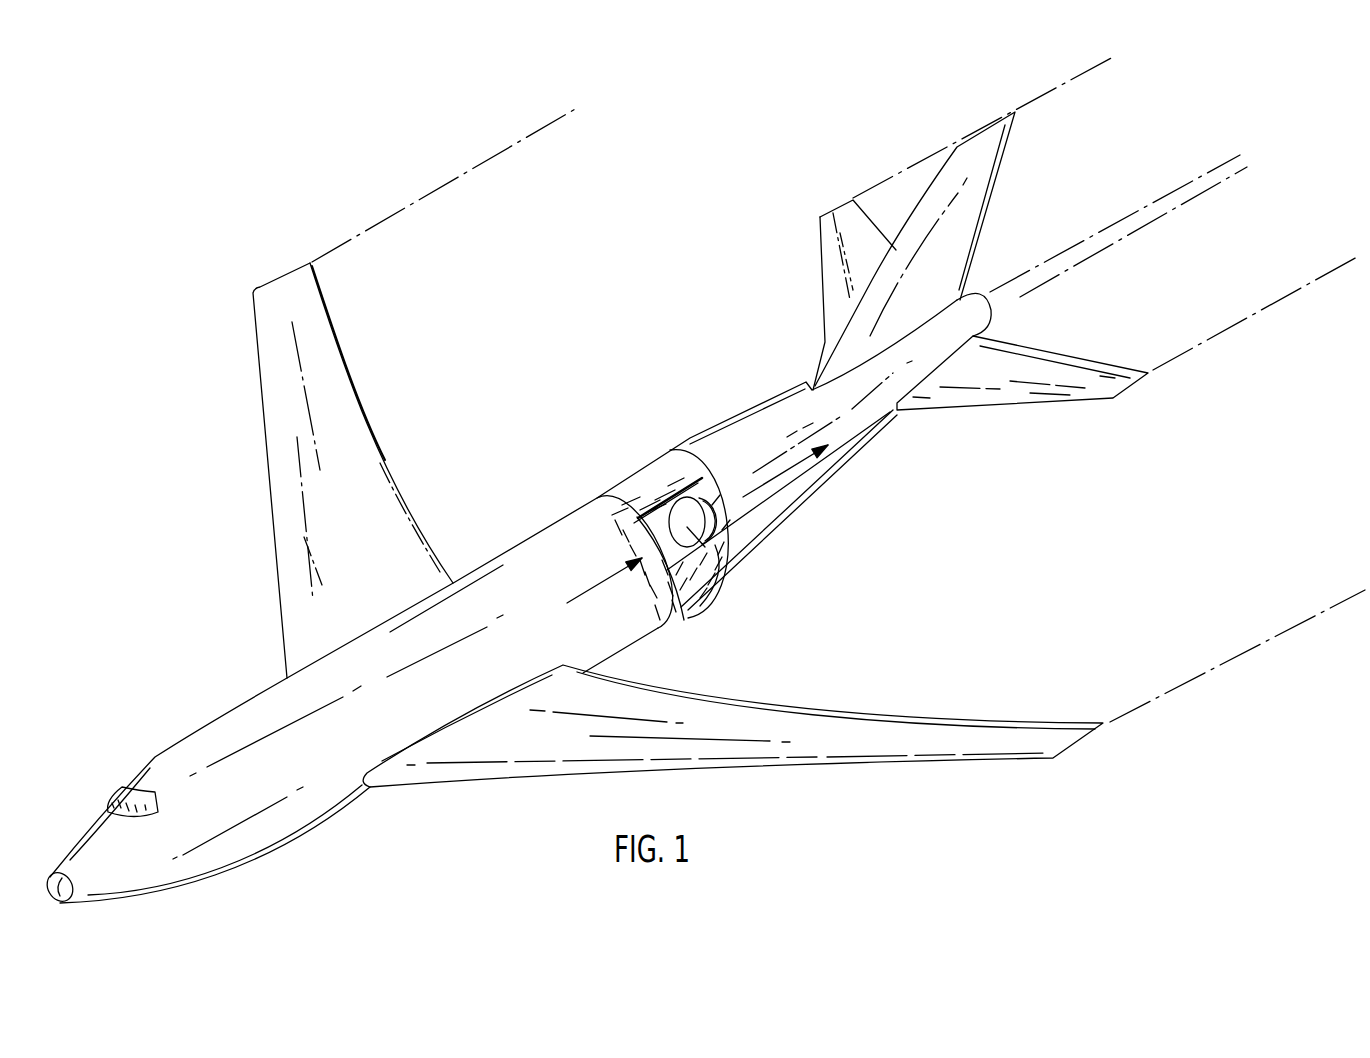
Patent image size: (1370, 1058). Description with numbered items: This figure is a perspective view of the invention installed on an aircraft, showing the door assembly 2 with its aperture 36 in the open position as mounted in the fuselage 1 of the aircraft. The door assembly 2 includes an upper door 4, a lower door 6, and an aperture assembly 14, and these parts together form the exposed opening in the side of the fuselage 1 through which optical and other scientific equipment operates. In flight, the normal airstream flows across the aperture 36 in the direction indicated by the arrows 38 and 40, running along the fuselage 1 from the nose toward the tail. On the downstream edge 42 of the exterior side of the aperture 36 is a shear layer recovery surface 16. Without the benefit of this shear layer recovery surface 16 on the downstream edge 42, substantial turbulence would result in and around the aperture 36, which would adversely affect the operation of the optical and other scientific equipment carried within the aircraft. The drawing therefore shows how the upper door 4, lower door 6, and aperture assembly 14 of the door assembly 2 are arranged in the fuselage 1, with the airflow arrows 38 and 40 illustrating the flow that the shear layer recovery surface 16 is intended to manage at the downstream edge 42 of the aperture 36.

The fuselage 1 is at (710, 457).
The door assembly 2 is at (605, 477).
The upper door 4 is at (613, 497).
The lower door 6 is at (697, 570).
The aperture assembly 14 is at (681, 622).
The shear layer recovery surface 16 is at (714, 522).
The aperture 36 is at (705, 547).
The arrow 38 is at (604, 578).
The arrow 40 is at (783, 477).
The downstream edge 42 is at (708, 505).